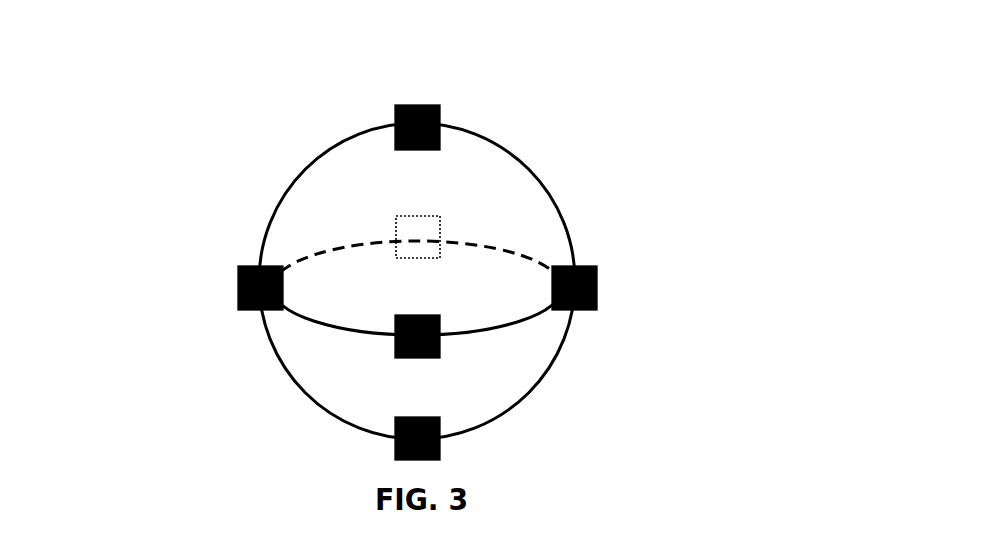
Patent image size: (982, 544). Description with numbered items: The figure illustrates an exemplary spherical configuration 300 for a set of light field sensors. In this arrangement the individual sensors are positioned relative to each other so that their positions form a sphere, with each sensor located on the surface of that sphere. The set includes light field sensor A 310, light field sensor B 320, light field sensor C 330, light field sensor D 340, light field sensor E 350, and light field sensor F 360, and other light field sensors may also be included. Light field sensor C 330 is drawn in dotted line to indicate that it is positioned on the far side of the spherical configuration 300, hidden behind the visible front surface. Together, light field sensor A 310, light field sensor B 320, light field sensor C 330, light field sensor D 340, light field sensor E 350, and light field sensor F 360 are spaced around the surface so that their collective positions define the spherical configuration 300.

The spherical configuration 300 is at (292, 100).
The light field sensor A 310 is at (440, 345).
The light field sensor B 320 is at (597, 278).
The light field sensor C 330 is at (410, 240).
The light field sensor D 340 is at (238, 298).
The light field sensor E 350 is at (545, 73).
The light field sensor F 360 is at (440, 455).